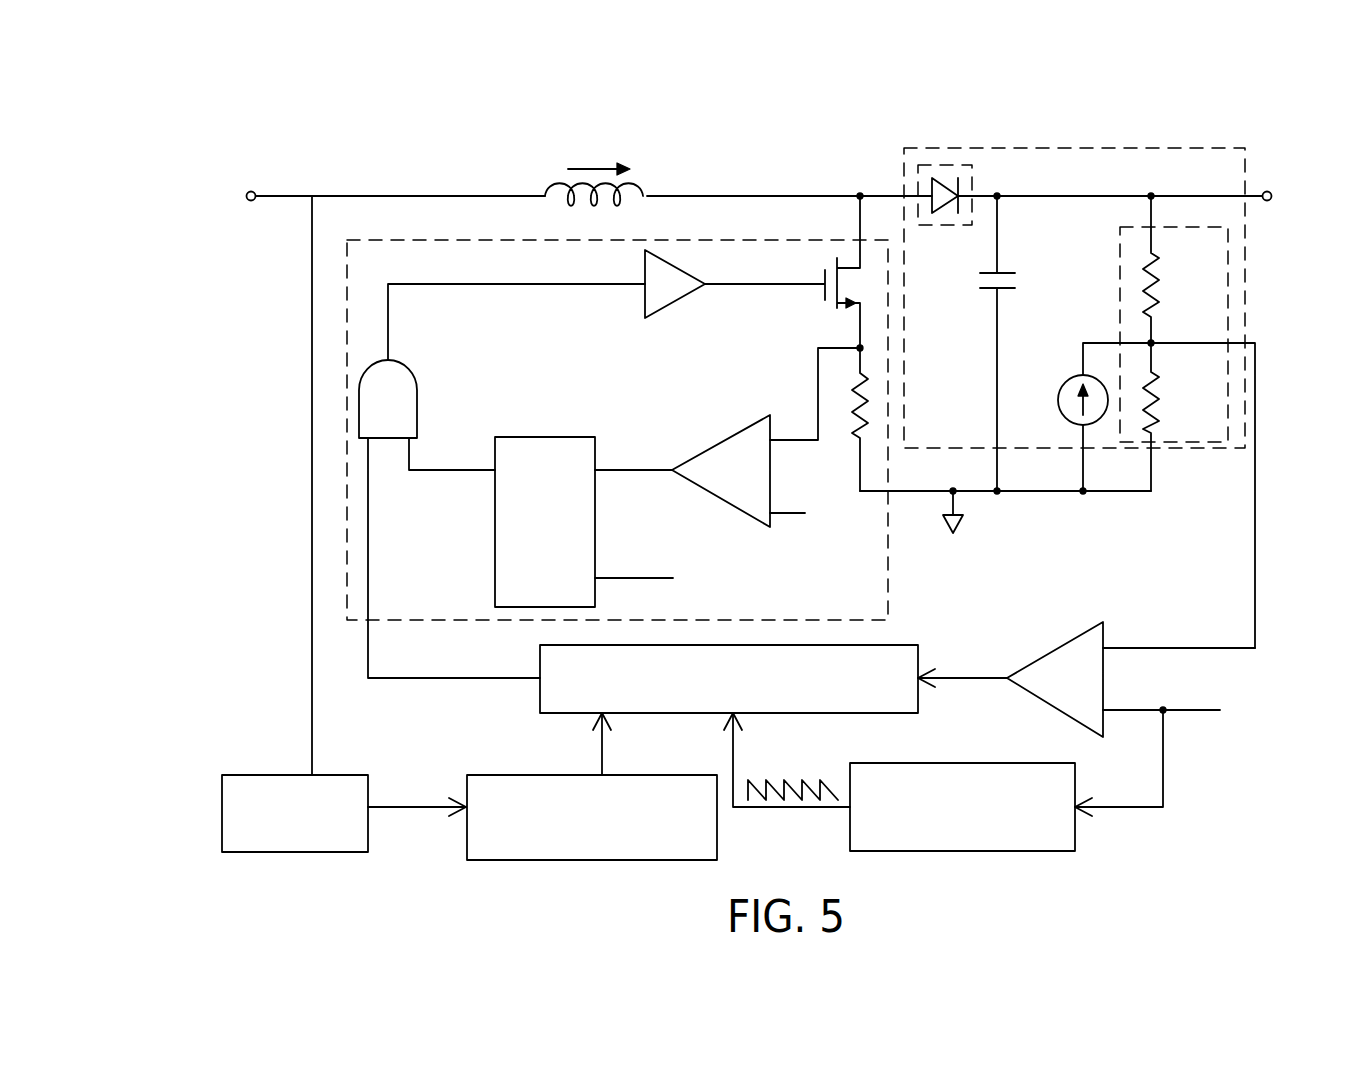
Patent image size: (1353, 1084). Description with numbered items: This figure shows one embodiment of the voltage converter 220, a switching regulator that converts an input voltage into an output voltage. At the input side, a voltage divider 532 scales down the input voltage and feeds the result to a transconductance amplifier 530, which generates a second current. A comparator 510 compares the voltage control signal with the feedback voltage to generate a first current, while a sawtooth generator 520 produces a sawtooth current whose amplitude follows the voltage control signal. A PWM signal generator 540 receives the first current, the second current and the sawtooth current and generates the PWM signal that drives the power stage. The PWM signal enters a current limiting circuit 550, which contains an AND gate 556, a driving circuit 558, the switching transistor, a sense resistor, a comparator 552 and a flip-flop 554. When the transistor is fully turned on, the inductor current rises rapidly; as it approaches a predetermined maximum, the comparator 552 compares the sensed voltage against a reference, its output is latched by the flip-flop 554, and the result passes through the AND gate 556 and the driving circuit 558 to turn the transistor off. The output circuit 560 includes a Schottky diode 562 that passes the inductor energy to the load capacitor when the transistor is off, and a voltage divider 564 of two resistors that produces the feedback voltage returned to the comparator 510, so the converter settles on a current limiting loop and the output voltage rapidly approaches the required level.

The voltage converter 220 is at (230, 166).
The comparator 510 is at (1058, 648).
The sawtooth generator 520 is at (963, 851).
The transconductance amplifier 530 is at (560, 860).
The voltage divider 532 is at (297, 852).
The PWM signal generator 540 is at (540, 705).
The current limiting circuit 550 is at (888, 577).
The comparator 552 is at (722, 439).
The flip-flop 554 is at (543, 437).
The AND gate 556 is at (418, 397).
The driving circuit 558 is at (677, 303).
The output circuit 560 is at (1245, 251).
The Schottky diode 562 is at (925, 165).
The voltage divider 564 is at (1228, 300).